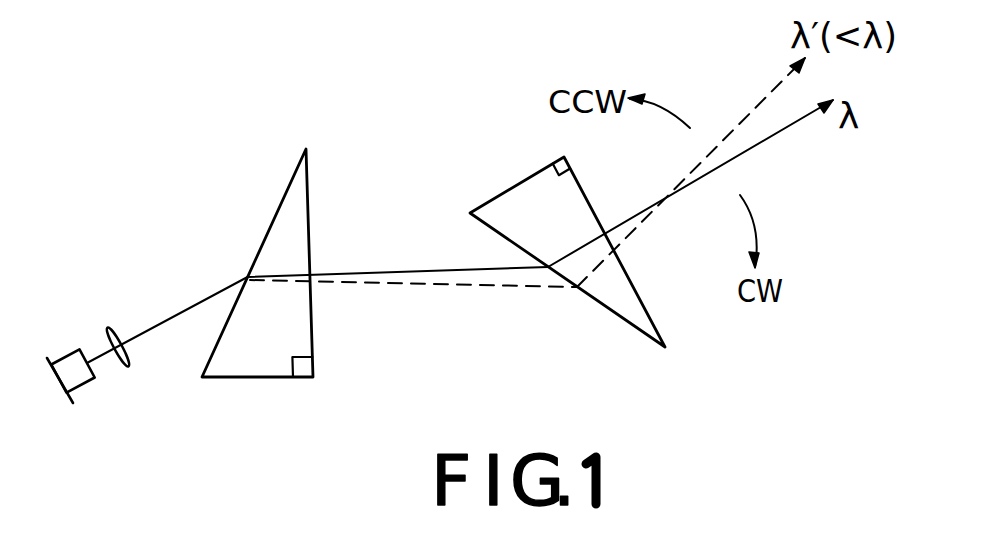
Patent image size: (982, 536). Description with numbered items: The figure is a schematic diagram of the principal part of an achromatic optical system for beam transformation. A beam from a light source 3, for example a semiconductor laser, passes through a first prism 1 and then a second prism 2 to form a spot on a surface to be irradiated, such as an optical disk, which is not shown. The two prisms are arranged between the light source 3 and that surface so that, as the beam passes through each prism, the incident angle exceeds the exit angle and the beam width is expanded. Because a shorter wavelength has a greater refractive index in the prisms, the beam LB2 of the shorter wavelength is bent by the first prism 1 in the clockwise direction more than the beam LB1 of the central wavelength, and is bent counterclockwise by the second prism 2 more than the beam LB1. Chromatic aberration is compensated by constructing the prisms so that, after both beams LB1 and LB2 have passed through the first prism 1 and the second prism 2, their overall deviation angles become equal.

The first prism 1 is at (292, 177).
The second prism 2 is at (513, 182).
The light source 3 is at (72, 353).
The beam of wavelength λ LB1 is at (372, 270).
The beam of wavelength λ' LB2 is at (422, 283).